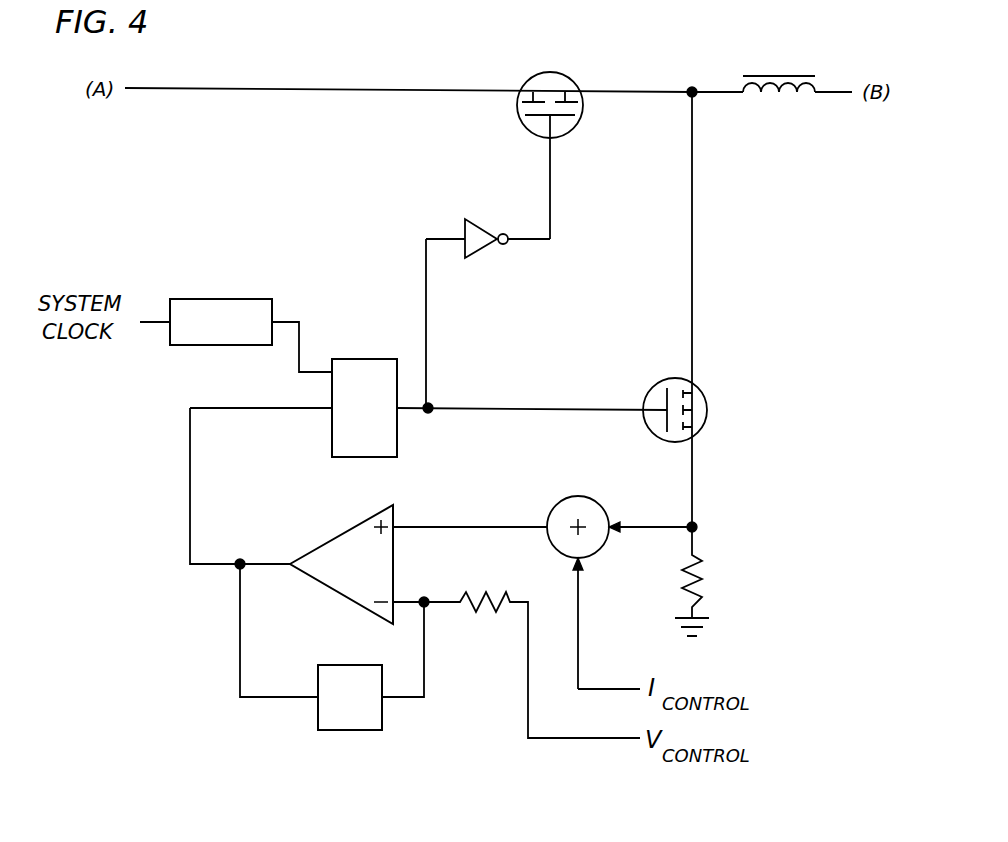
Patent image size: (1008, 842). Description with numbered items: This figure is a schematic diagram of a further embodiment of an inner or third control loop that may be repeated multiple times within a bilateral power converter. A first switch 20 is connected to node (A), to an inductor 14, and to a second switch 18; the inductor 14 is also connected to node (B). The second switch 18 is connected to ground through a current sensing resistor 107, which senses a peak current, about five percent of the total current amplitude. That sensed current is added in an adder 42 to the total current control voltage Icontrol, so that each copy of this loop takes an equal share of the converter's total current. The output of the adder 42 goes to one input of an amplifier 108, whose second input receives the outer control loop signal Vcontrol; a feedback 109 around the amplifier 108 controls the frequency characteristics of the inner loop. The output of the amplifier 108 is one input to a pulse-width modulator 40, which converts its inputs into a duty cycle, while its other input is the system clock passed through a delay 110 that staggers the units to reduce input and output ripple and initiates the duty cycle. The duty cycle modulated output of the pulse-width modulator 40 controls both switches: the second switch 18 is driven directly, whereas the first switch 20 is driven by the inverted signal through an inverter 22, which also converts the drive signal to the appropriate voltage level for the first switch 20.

The inductor 14 is at (768, 75).
The second switch 18 is at (707, 402).
The first switch 20 is at (565, 75).
The inverter 22 is at (478, 220).
The pulse-width modulator 40 is at (362, 358).
The adder 42 is at (577, 496).
The current sensing resistor 107 is at (700, 573).
The amplifier 108 is at (345, 530).
The feedback 109 is at (352, 731).
The delay 110 is at (222, 299).